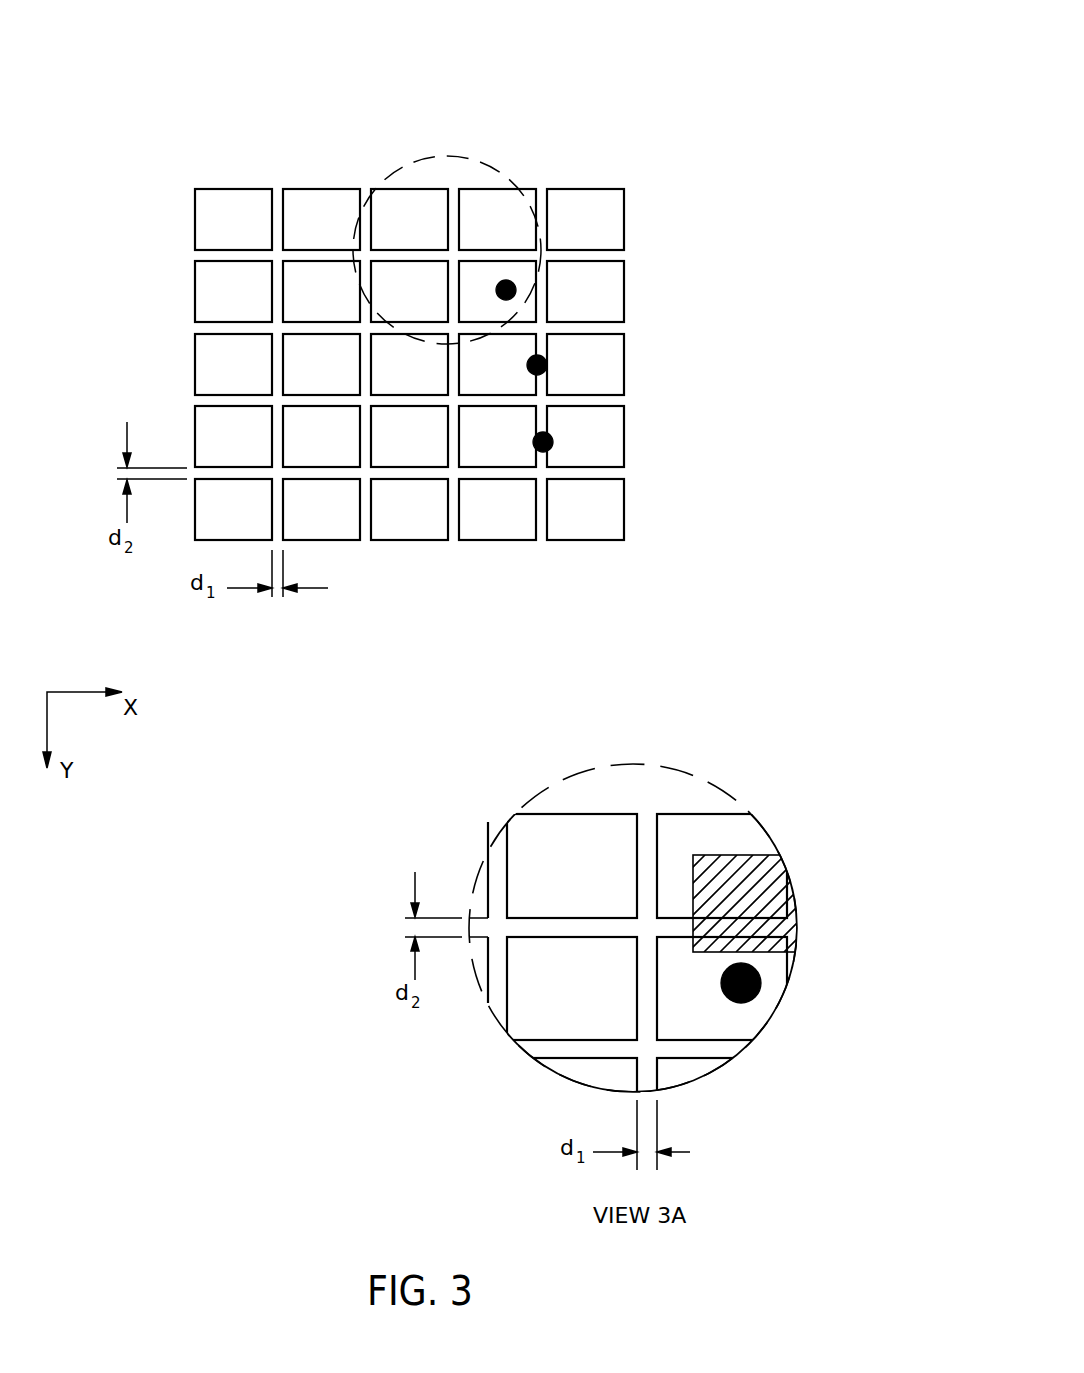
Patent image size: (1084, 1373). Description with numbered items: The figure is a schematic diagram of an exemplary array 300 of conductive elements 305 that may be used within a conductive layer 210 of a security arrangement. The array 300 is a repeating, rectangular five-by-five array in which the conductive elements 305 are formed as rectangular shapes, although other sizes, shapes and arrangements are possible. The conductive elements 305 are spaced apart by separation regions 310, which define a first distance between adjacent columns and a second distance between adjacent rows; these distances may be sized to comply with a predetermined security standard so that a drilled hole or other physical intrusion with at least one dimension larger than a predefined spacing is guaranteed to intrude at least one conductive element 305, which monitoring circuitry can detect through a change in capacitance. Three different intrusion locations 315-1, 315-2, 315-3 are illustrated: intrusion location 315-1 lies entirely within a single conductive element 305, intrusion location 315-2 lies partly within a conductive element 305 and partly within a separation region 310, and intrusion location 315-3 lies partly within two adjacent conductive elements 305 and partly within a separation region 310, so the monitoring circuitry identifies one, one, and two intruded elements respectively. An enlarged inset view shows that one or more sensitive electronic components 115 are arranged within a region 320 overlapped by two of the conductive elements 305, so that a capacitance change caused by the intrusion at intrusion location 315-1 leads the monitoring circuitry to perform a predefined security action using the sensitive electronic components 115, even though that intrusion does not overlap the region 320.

The array 300 is at (763, 40).
The conductive layer 210 is at (520, 621).
The separation regions 310 is at (186, 254).
The conductive elements 305 is at (235, 187).
The intrusion location 315-1 is at (516, 290).
The intrusion location 315-2 is at (547, 365).
The intrusion location 315-3 is at (553, 440).
The region 320 is at (786, 883).
The sensitive electronic components 115 is at (748, 851).